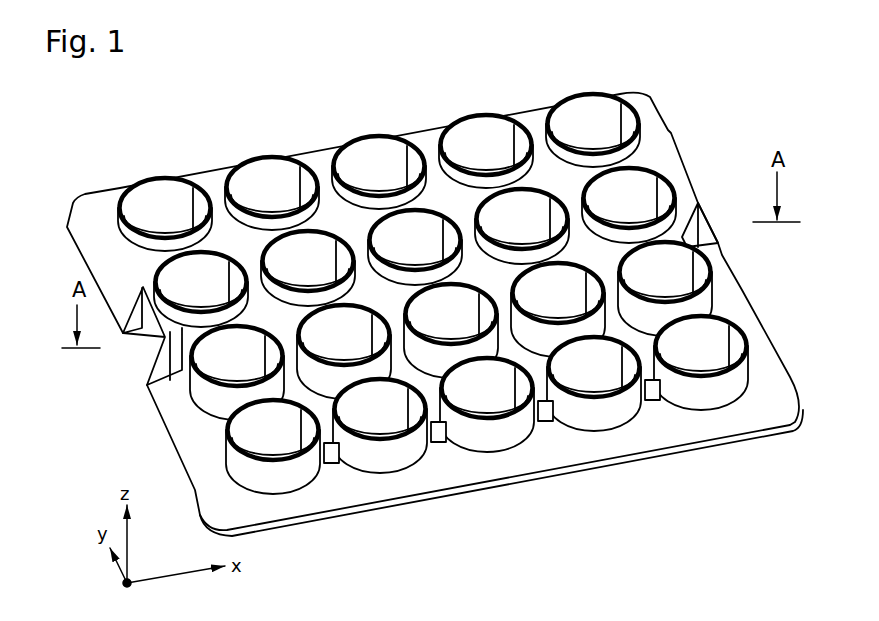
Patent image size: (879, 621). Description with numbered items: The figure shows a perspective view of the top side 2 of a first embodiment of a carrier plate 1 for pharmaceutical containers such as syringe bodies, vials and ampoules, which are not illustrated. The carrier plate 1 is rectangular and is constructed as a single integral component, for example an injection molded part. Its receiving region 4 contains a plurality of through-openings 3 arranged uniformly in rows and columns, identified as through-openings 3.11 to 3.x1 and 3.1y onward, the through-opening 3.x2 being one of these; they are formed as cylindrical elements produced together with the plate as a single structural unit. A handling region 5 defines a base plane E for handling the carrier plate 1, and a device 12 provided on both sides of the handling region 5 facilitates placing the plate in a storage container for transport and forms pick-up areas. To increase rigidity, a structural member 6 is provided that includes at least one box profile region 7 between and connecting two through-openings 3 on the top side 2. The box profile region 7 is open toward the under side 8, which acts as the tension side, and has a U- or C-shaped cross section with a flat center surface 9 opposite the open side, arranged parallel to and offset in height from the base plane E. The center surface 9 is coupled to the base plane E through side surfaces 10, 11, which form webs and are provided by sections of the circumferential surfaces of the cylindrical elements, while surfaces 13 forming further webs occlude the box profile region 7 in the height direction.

The carrier plate 1 is at (431, 313).
The top side 2 is at (96, 203).
The through-openings 3 is at (377, 148).
The through-opening 3.1y is at (167, 190).
The through-opening 3.x1 is at (740, 330).
The through-opening 3.x2 is at (590, 109).
The through-opening 3.11 is at (253, 435).
The receiving region 4 is at (433, 175).
The handling region 5 is at (252, 527).
The structural member 6 is at (568, 109).
The box profile region 7 is at (543, 183).
The under side 8 is at (470, 490).
The center surface 9 is at (316, 175).
The side surface 10 is at (359, 506).
The side surface 11 is at (340, 463).
The device 12 is at (138, 305).
The surfaces 13 is at (368, 506).
The base plane E is at (632, 432).